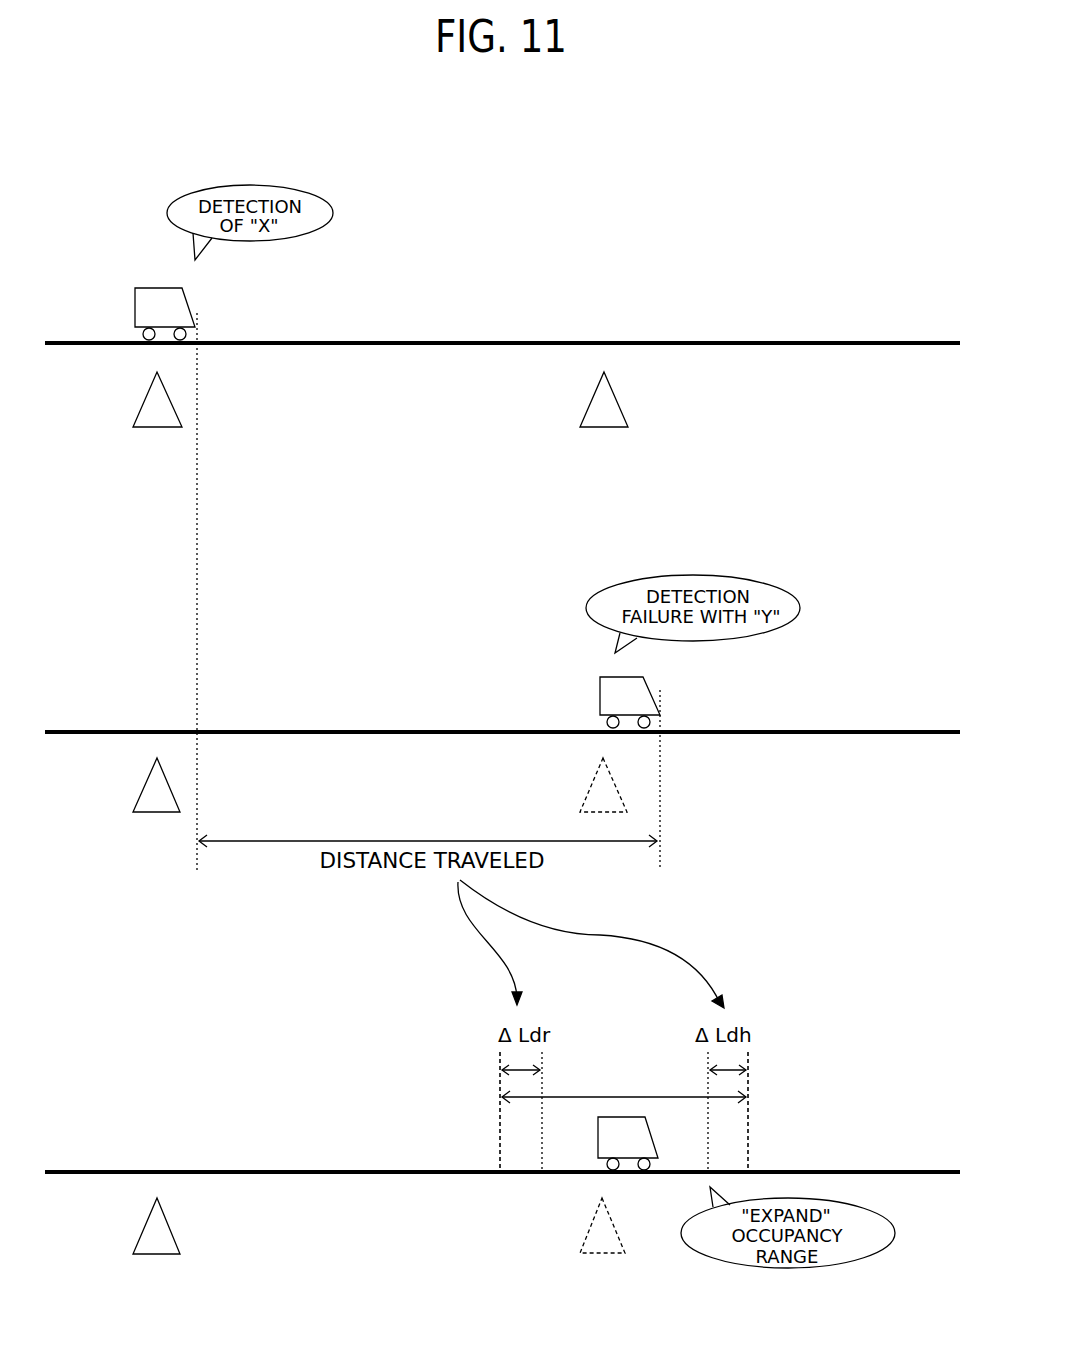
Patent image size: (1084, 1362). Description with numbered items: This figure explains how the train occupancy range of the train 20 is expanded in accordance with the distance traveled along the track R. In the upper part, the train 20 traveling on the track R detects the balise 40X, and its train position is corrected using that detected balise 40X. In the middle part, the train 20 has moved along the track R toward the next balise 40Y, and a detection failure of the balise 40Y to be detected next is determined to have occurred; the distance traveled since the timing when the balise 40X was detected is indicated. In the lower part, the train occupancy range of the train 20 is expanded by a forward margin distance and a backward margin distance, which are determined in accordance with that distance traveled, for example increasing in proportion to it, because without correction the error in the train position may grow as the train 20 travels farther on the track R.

The train 20 is at (143, 293).
The road R is at (766, 341).
The balise 40X is at (148, 430).
The balise 40Y is at (602, 430).